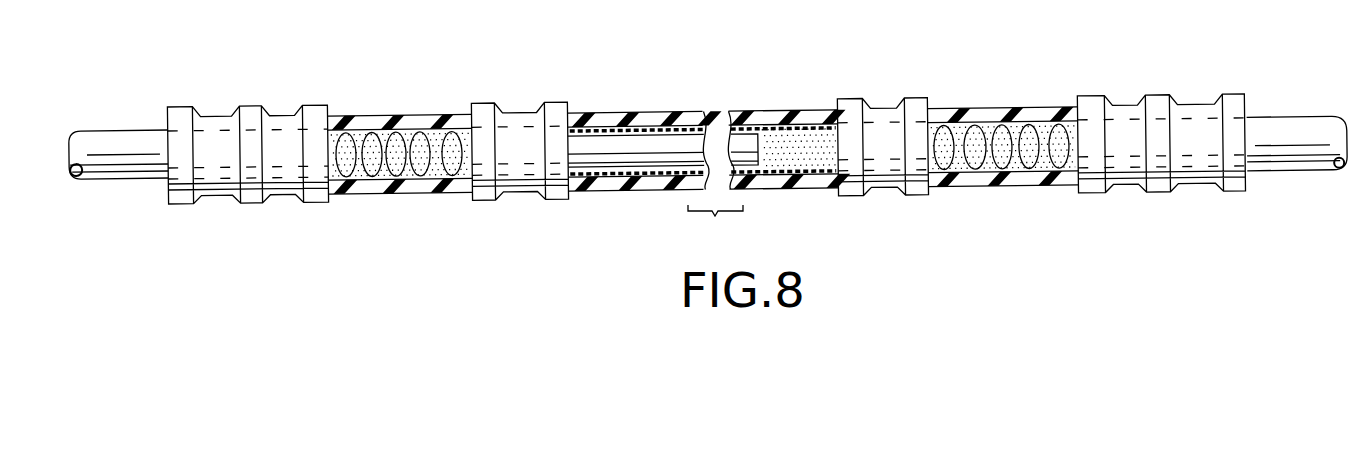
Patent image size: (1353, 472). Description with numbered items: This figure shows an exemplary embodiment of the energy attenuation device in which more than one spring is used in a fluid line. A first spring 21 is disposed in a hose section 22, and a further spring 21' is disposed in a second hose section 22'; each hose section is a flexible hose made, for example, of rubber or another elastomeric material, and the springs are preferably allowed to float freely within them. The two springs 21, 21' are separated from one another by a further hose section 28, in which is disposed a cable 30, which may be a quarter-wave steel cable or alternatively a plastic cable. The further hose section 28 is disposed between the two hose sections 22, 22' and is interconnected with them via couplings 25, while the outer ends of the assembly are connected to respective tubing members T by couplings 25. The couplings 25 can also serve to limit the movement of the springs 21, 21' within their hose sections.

The tubing member T is at (113, 130).
The coupling 25 is at (277, 112).
The spring 21 is at (399, 113).
The further spring 21' is at (1002, 108).
The hose section 22 is at (400, 194).
The second hose section 22' is at (1002, 185).
The further hose section 28 is at (647, 194).
The steel cable 30 is at (657, 145).